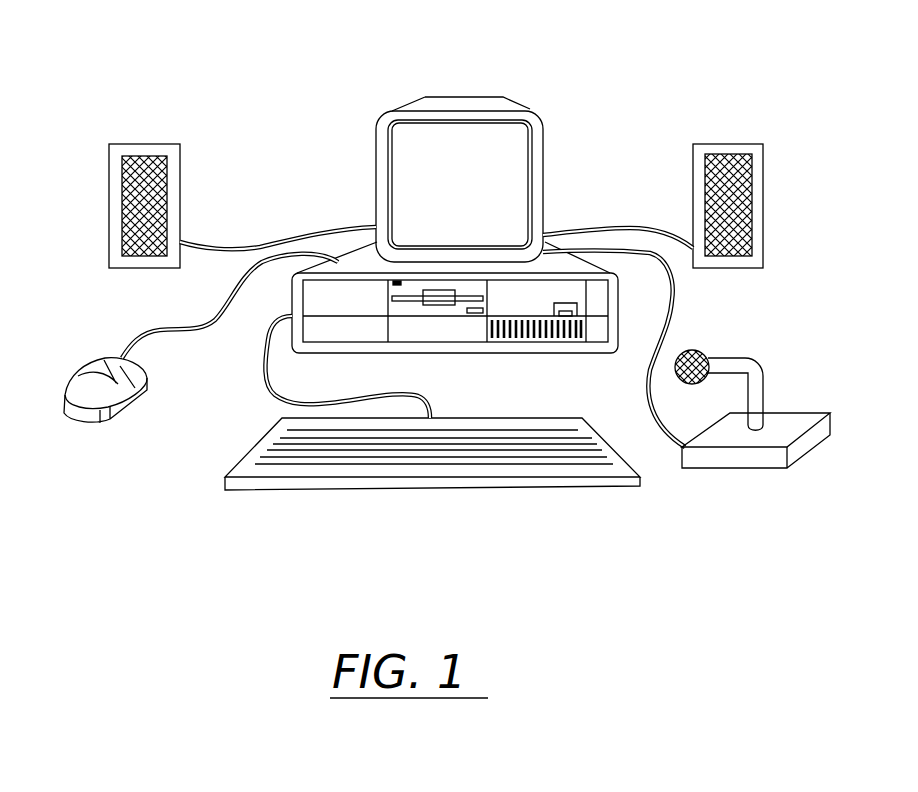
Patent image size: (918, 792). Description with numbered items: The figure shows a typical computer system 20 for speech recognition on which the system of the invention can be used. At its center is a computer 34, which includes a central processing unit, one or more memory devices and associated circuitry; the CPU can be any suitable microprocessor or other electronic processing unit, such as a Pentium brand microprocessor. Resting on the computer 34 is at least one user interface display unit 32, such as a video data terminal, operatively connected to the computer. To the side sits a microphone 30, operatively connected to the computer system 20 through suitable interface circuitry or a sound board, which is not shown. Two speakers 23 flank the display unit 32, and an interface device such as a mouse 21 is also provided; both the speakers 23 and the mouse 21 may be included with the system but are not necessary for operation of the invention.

The computer system 20 is at (305, 66).
The mouse 21 is at (98, 357).
The speakers 23 is at (147, 144).
The microphone 30 is at (760, 468).
The user interface display unit 32 is at (545, 157).
The computer 34 is at (562, 250).